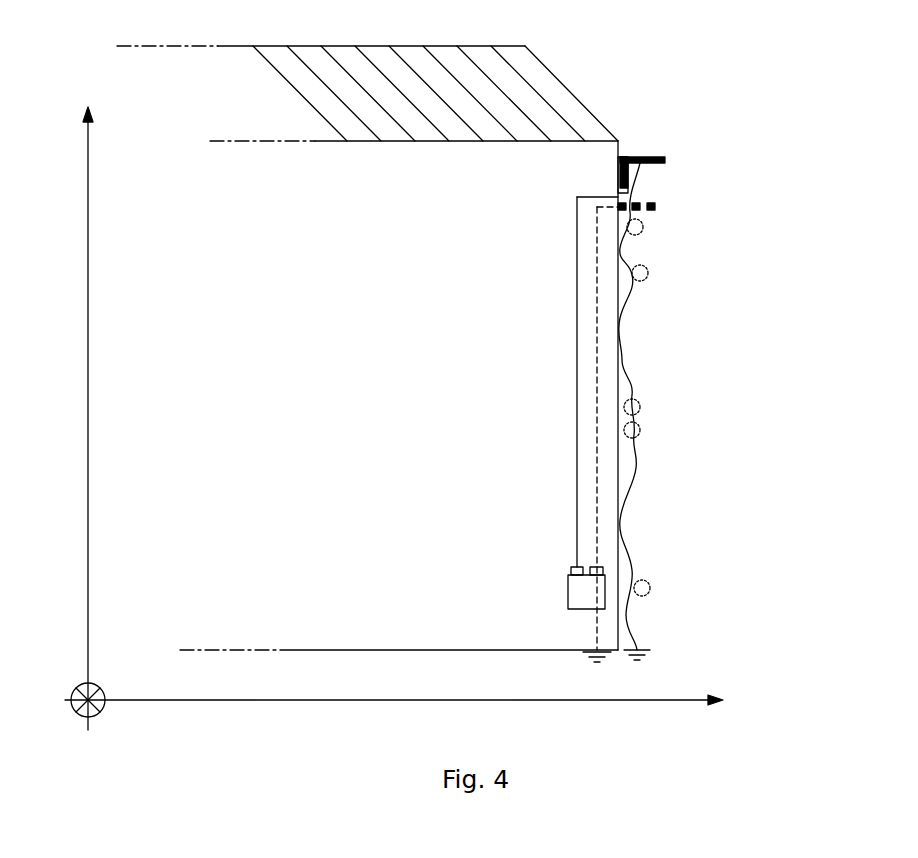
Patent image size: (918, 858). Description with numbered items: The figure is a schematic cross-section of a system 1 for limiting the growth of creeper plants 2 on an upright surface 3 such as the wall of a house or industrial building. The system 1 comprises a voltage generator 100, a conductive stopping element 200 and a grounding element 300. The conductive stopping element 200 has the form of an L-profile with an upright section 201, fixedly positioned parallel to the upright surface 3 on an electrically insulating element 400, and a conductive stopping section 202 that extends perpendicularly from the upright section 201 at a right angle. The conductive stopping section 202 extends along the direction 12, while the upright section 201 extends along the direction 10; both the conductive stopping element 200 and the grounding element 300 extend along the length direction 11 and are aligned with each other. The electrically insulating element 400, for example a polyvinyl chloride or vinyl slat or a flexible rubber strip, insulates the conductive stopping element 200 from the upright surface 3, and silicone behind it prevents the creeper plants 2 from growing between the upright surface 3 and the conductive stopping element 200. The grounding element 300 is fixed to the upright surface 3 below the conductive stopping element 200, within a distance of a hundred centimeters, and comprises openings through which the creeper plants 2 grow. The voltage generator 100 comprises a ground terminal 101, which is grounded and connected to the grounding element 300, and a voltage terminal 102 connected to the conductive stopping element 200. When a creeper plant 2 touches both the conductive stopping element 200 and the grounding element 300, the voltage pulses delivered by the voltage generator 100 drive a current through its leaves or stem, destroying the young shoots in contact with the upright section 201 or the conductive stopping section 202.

The system 1 is at (765, 224).
The creeper plants 2 is at (641, 299).
The upright surface 3 is at (626, 383).
The direction 10 is at (88, 135).
The length direction 11 is at (113, 682).
The direction 12 is at (692, 699).
The voltage generator 100 is at (568, 592).
The ground terminal 101 is at (607, 562).
The voltage terminal 102 is at (566, 563).
The conductive stopping element 200 is at (642, 145).
The upright section 201 is at (618, 180).
The conductive stopping section 202 is at (641, 157).
The grounding element 300 is at (660, 195).
The electrically insulating element 400 is at (618, 158).